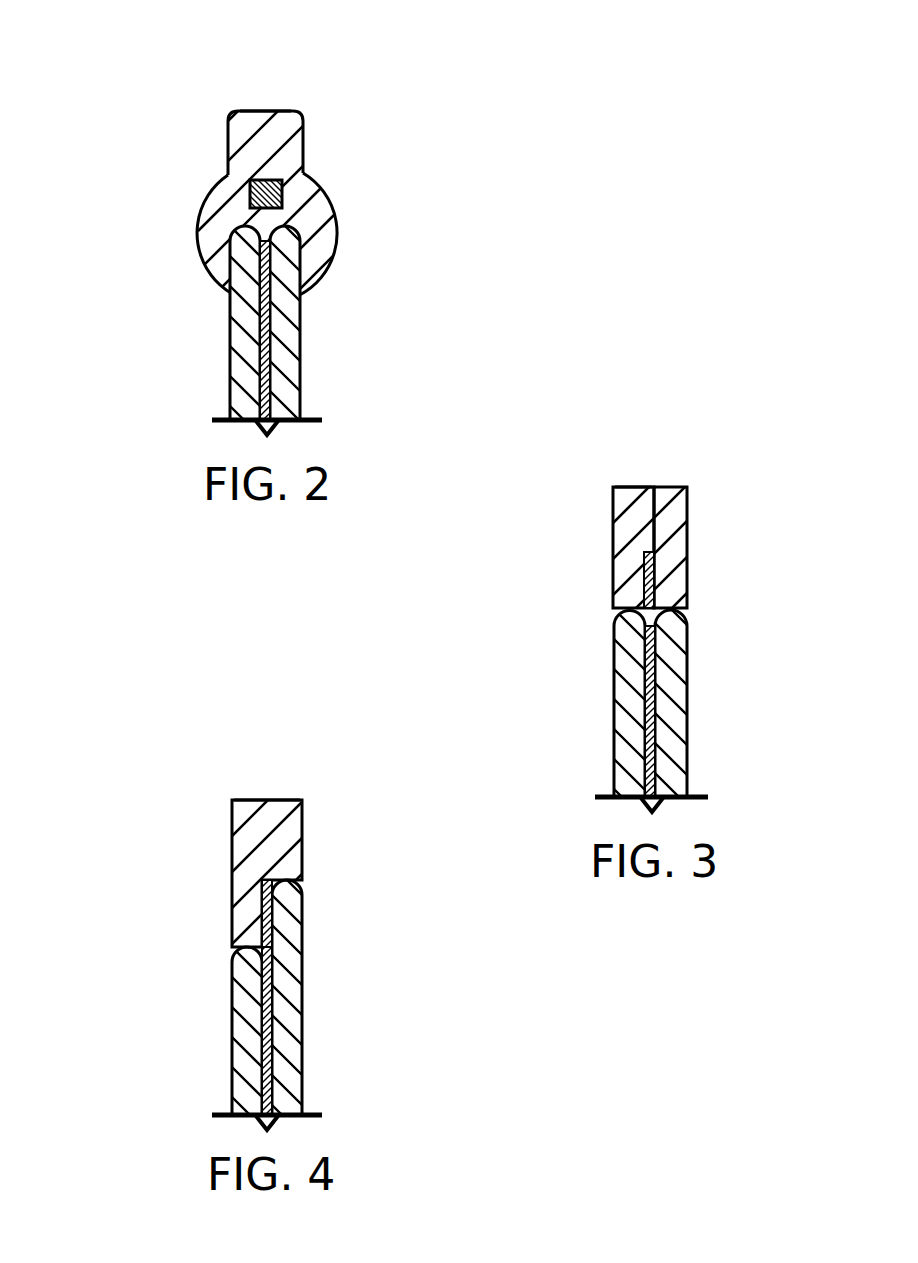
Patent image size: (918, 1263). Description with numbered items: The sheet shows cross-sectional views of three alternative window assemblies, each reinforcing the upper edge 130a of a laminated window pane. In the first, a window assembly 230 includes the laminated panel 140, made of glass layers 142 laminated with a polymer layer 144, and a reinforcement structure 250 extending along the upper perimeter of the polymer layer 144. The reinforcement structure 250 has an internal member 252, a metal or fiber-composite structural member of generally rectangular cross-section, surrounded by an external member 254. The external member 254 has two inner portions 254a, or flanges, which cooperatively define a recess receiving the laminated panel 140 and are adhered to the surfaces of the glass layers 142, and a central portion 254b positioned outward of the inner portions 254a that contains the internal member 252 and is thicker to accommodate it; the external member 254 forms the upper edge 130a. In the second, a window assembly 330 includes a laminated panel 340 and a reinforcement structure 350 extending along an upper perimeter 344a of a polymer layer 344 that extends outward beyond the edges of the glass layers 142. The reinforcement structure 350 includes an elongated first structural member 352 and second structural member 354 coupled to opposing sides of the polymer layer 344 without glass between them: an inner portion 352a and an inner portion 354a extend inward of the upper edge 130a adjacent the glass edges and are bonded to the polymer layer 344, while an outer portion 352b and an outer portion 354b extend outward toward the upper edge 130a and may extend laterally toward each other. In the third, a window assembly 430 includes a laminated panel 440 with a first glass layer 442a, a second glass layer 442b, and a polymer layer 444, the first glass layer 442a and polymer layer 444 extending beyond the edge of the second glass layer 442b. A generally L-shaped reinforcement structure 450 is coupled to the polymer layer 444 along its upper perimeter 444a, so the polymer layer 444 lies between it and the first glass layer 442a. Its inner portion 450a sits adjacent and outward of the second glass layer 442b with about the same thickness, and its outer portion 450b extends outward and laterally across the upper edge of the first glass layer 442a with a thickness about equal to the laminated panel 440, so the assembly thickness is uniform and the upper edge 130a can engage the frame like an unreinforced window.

In FIG. 2, the upper edge 130a is at (277, 110).
In FIG. 3, the upper edge 130a is at (627, 488).
In FIG. 4, the upper edge 130a is at (240, 800).
In FIG. 2, the laminated panel 140 is at (235, 336).
In FIG. 2, the glass layers 142 is at (302, 370).
In FIG. 3, the glass layers 142 is at (686, 780).
In FIG. 2, the polymer layer 144 is at (302, 333).
In FIG. 2, the window assembly 230 is at (285, 238).
In FIG. 2, the reinforcement structure 250 is at (263, 215).
In FIG. 2, the internal member 252 is at (290, 203).
In FIG. 2, the external member 254 is at (273, 215).
In FIG. 2, the inner portions 254a is at (222, 266).
In FIG. 2, the central portion 254b is at (230, 148).
In FIG. 3, the window assembly 330 is at (656, 563).
In FIG. 3, the laminated panel 340 is at (656, 699).
In FIG. 3, the polymer layer 344 is at (656, 722).
In FIG. 3, the upper perimeter 344a is at (649, 553).
In FIG. 3, the reinforcement structure 350 is at (647, 486).
In FIG. 3, the first structural member 352 is at (552, 540).
In FIG. 3, the inner portion 352a is at (613, 587).
In FIG. 3, the outer portion 352b is at (613, 500).
In FIG. 3, the second structural member 354 is at (745, 540).
In FIG. 3, the inner portion 354a is at (688, 575).
In FIG. 3, the outer portion 354b is at (688, 495).
In FIG. 4, the window assembly 430 is at (254, 875).
In FIG. 4, the laminated panel 440 is at (263, 921).
In FIG. 4, the first glass layer 442a is at (302, 1082).
In FIG. 4, the second glass layer 442b is at (232, 992).
In FIG. 4, the polymer layer 444 is at (272, 1025).
In FIG. 4, the upper perimeter 444a is at (266, 880).
In FIG. 4, the reinforcement structure 450 is at (183, 816).
In FIG. 4, the inner portion 450a is at (232, 925).
In FIG. 4, the outer portion 450b is at (232, 847).